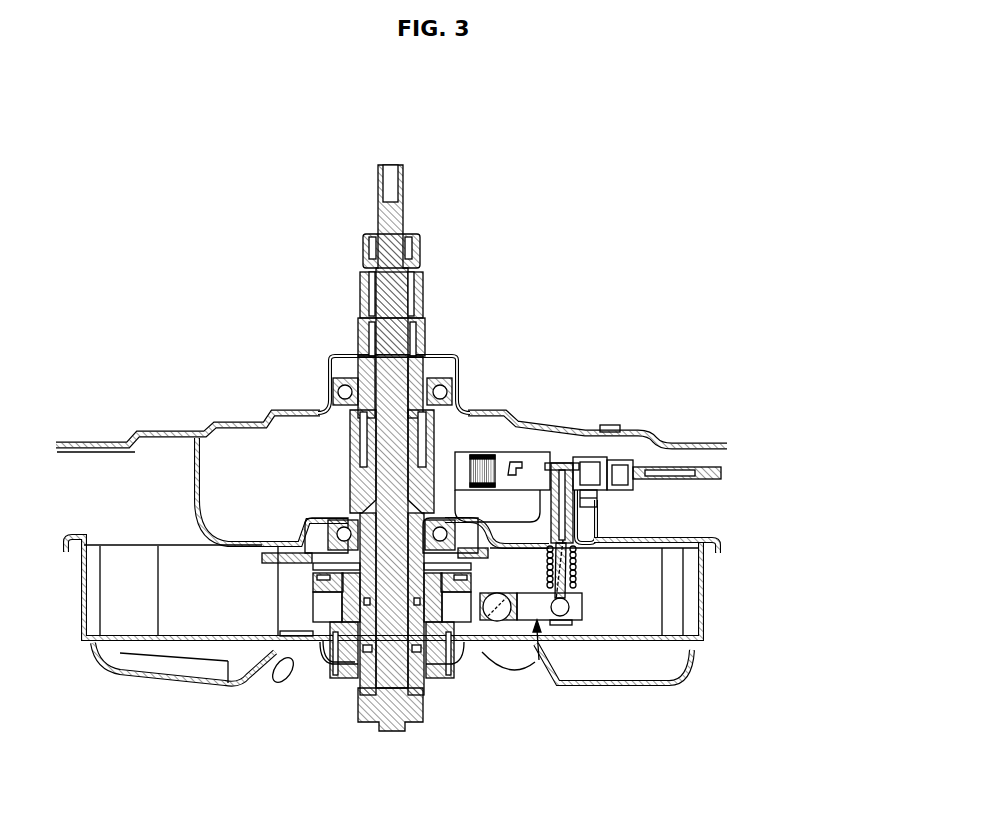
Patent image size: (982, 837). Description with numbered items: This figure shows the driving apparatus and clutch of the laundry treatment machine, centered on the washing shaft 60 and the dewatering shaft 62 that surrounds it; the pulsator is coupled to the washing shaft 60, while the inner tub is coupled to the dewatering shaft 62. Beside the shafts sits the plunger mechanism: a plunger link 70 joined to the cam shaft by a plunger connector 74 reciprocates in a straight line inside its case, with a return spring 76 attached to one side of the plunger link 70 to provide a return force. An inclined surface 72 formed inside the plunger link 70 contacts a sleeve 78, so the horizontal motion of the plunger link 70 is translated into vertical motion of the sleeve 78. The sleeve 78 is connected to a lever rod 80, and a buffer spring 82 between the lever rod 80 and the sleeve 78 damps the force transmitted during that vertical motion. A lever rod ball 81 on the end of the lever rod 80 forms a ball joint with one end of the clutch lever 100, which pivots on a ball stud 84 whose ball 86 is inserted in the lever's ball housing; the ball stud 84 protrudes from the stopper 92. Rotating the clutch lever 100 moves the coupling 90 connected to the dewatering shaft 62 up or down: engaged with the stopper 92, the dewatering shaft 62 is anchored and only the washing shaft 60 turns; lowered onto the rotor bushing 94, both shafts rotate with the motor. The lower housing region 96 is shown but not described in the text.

The washing shaft 60 is at (393, 267).
The dewatering shaft 62 is at (440, 392).
The plunger link 70 is at (592, 460).
The inclined surface 72 is at (553, 462).
The plunger connector 74 is at (667, 460).
The return spring 76 is at (490, 457).
The sleeve 78 is at (587, 505).
The lever rod 80 is at (572, 597).
The lever rod ball 81 is at (582, 602).
The buffer spring 82 is at (576, 574).
The ball stud 84 is at (538, 650).
The ball 86 is at (630, 495).
The coupling 90 is at (424, 688).
The stopper 92 is at (292, 657).
The rotor bushing 94 is at (320, 663).
The lower housing 96 is at (472, 642).
The clutch lever 100 is at (502, 612).